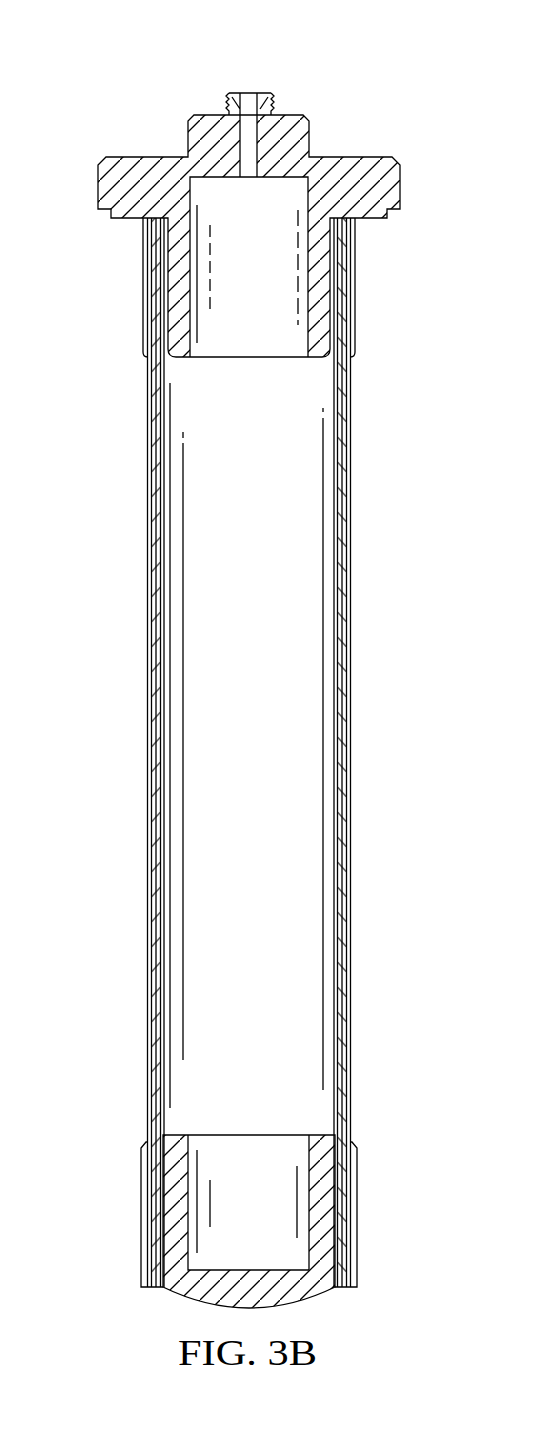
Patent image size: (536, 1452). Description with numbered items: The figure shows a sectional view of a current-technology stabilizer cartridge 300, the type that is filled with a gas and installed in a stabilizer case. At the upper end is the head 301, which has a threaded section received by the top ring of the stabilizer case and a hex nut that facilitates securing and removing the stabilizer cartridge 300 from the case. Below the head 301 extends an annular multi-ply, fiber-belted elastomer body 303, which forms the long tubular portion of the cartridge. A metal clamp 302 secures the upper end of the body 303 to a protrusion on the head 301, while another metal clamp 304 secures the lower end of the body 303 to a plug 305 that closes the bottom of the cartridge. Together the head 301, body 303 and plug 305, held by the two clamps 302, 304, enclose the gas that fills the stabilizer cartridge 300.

The stabilizer cartridge 300 is at (339, 74).
The head 301 is at (300, 138).
The metal clamp 302 is at (143, 259).
The annular multi-ply, fiber-belted elastomer body 303 is at (153, 609).
The metal clamp 304 is at (141, 1222).
The plug 305 is at (178, 1288).